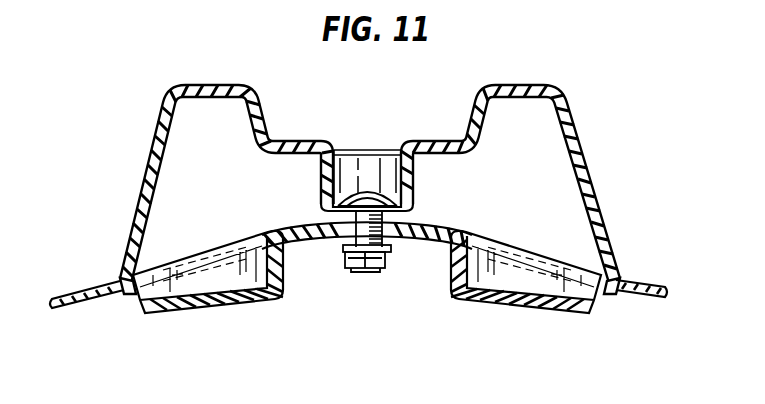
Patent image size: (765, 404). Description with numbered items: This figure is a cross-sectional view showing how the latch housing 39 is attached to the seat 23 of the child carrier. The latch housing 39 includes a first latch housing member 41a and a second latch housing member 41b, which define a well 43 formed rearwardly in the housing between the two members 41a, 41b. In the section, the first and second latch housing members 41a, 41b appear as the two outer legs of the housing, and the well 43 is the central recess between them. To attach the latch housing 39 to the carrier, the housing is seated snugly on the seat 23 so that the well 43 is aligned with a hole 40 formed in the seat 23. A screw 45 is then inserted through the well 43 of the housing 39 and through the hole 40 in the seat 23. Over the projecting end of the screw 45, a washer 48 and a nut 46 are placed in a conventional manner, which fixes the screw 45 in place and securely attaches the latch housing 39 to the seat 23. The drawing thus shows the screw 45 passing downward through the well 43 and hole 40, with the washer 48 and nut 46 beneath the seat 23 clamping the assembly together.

The seat 23 is at (90, 300).
The latch housing 39 is at (355, 179).
The hole 40 is at (398, 247).
The first latch housing member 41a is at (150, 158).
The second latch housing member 41b is at (578, 112).
The well 43 is at (346, 150).
The screw 45 is at (372, 192).
The nut 46 is at (378, 272).
The washer 48 is at (331, 252).